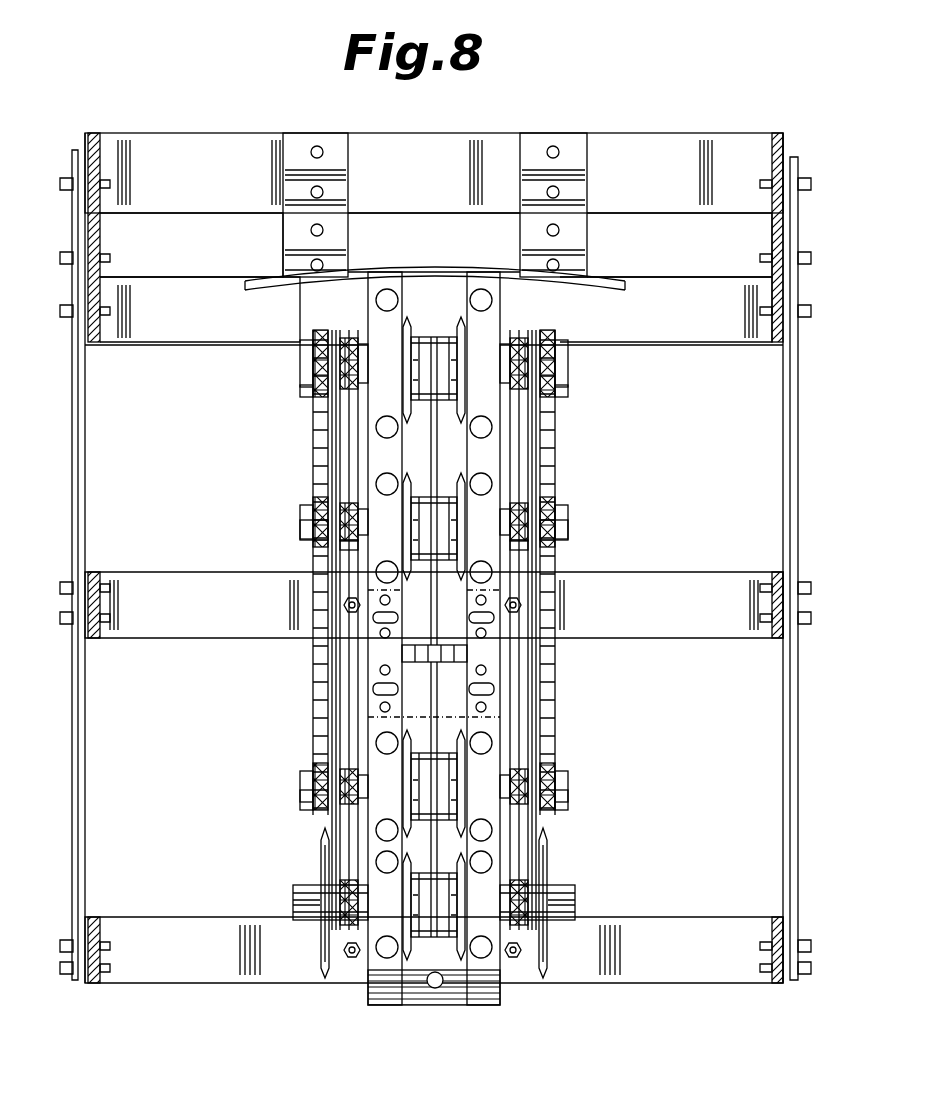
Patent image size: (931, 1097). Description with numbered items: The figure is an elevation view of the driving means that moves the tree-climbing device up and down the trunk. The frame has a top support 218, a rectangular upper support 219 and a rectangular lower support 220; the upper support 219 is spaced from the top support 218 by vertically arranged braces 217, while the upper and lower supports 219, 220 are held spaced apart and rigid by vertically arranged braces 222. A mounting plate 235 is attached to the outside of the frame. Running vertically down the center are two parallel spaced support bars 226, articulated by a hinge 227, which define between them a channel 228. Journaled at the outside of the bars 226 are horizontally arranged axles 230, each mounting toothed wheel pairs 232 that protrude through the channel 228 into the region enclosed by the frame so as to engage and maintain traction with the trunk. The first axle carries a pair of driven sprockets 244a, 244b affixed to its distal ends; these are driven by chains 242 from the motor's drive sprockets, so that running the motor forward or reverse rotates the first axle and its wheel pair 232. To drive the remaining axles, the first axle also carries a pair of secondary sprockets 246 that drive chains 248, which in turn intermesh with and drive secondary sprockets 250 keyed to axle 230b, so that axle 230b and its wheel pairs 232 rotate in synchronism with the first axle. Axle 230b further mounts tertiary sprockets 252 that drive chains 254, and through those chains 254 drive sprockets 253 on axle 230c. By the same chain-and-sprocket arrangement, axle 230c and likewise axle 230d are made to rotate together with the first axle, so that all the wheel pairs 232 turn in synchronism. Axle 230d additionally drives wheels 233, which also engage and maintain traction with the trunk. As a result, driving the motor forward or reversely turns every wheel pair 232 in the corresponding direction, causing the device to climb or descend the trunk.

The braces 217 is at (78, 218).
The top support 218 is at (707, 133).
The upper support 219 is at (695, 350).
The lower support 220 is at (652, 935).
The braces 222 is at (797, 545).
The support bars 226 is at (385, 274).
The hinge 227 is at (452, 660).
The channel 228 is at (457, 705).
The axles 230 is at (300, 395).
The axle 230b is at (320, 530).
The axle 230c is at (330, 808).
The axle 230d is at (335, 897).
The toothed wheel pairs 232 is at (442, 335).
The wheels 233 is at (320, 858).
The mounting plate 235 is at (283, 240).
The chains 242 is at (310, 438).
The driven sprocket 244a is at (565, 320).
The driven sprocket 244b is at (307, 313).
The secondary sprockets 246 is at (350, 333).
The chains 248 is at (340, 447).
The secondary sprockets 250 is at (340, 545).
The tertiary sprockets 252 is at (310, 502).
The sprockets 253 is at (310, 762).
The chains 254 is at (310, 658).